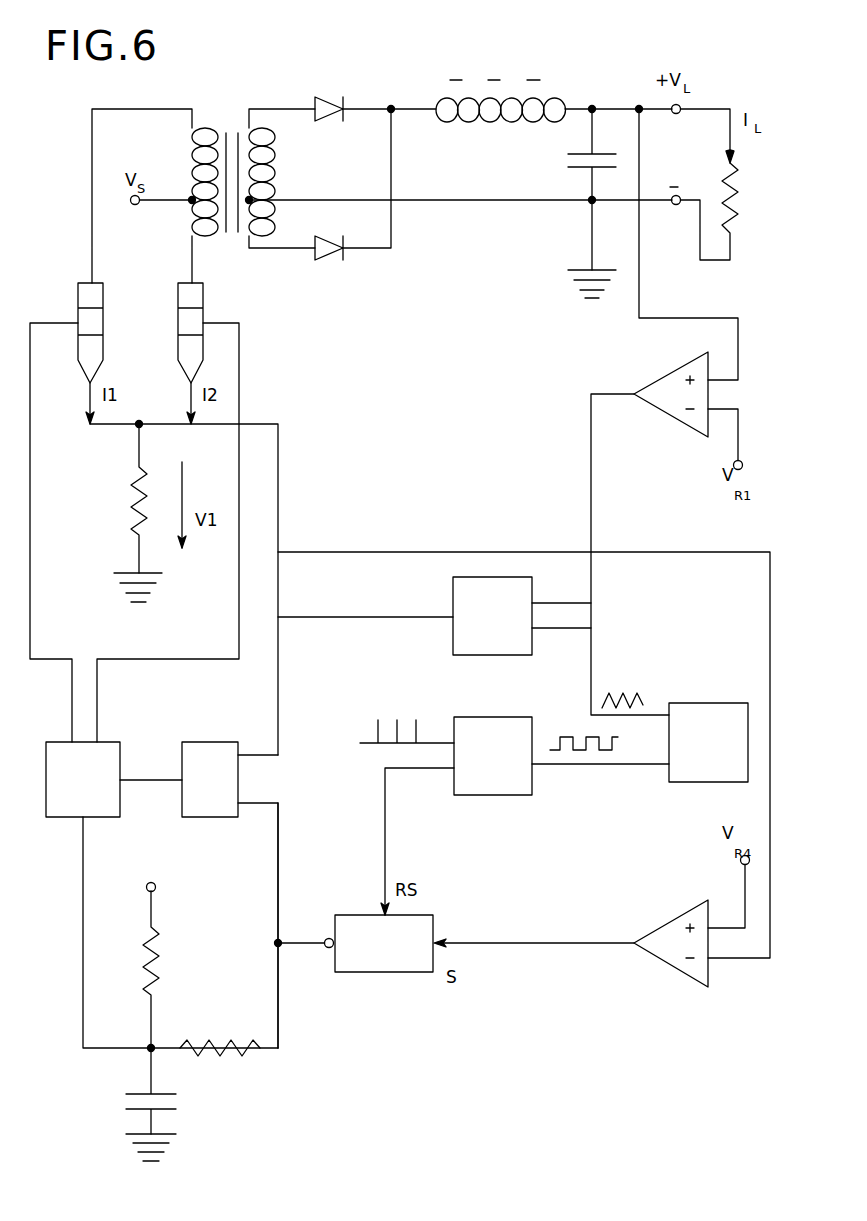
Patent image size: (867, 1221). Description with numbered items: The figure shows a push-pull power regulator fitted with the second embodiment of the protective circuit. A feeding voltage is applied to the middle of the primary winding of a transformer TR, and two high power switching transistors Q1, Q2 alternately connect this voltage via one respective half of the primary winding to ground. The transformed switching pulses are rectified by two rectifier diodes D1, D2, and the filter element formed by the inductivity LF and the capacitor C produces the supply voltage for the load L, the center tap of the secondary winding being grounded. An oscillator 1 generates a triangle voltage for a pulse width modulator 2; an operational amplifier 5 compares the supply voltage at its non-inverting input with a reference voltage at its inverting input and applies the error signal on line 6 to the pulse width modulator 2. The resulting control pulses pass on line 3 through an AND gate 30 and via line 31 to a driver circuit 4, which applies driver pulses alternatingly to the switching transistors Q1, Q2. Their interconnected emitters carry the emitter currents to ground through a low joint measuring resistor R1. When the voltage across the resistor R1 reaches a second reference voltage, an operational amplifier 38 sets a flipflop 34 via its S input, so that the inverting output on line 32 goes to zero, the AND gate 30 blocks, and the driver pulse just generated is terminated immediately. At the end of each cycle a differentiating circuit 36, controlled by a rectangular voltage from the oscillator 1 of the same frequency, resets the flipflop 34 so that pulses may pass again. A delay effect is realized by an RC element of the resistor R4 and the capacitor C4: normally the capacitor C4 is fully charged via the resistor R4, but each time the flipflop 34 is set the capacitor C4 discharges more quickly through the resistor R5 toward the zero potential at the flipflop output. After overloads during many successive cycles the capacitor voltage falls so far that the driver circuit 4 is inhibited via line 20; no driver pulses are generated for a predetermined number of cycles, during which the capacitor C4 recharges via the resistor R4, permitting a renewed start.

The oscillator 1 is at (697, 712).
The pulse width modulator 2 is at (470, 637).
The line 3 is at (355, 617).
The driver circuit 4 is at (82, 804).
The operational amplifier 5 is at (670, 390).
The line 6 is at (591, 465).
The line 20 is at (83, 925).
The AND gate 30 is at (213, 760).
The line 31 is at (152, 780).
The line 32 is at (278, 877).
The flipflop 34 is at (355, 957).
The differentiating circuit 36 is at (475, 783).
The operational amplifier 38 is at (675, 942).
The transformer TR is at (233, 160).
The rectifier diode D1 is at (323, 97).
The rectifier diode D2 is at (322, 262).
The inductivity LF is at (495, 125).
The capacitor C is at (577, 152).
The load L is at (722, 182).
The switching transistor Q1 is at (103, 322).
The switching transistor Q2 is at (203, 322).
The measuring resistor R1 is at (135, 478).
The resistor R4 is at (165, 968).
The resistor R5 is at (207, 1044).
The capacitor C4 is at (136, 1091).